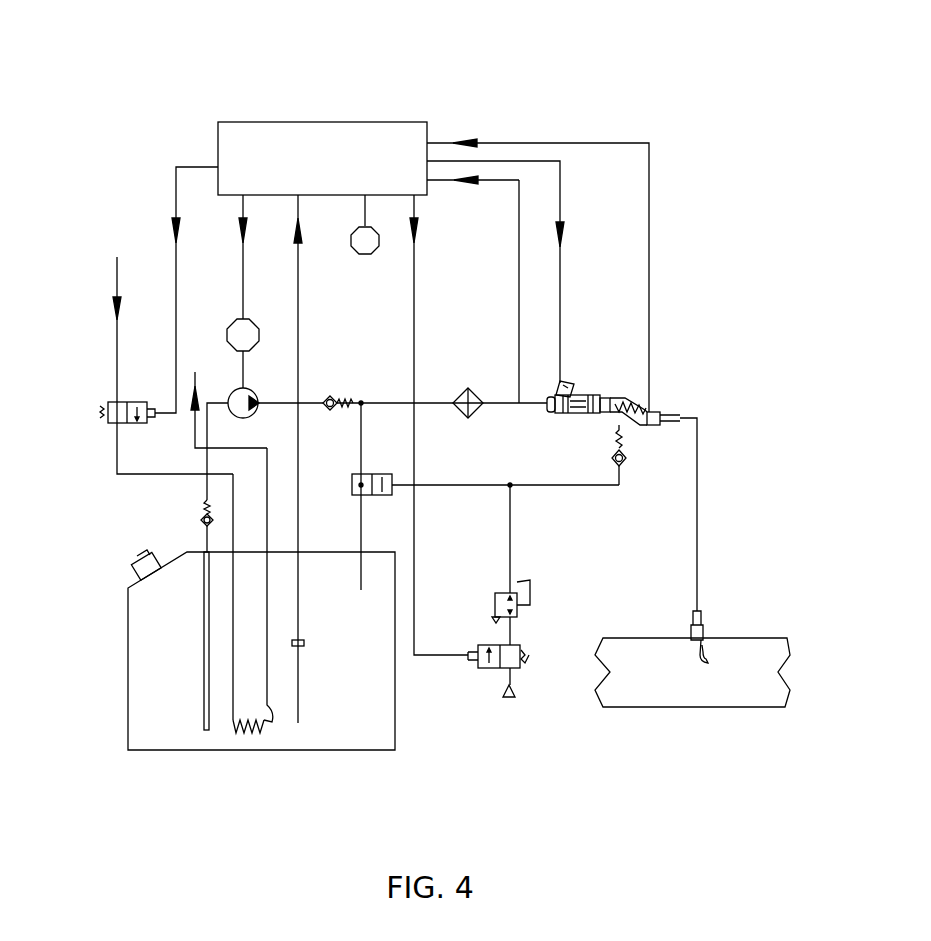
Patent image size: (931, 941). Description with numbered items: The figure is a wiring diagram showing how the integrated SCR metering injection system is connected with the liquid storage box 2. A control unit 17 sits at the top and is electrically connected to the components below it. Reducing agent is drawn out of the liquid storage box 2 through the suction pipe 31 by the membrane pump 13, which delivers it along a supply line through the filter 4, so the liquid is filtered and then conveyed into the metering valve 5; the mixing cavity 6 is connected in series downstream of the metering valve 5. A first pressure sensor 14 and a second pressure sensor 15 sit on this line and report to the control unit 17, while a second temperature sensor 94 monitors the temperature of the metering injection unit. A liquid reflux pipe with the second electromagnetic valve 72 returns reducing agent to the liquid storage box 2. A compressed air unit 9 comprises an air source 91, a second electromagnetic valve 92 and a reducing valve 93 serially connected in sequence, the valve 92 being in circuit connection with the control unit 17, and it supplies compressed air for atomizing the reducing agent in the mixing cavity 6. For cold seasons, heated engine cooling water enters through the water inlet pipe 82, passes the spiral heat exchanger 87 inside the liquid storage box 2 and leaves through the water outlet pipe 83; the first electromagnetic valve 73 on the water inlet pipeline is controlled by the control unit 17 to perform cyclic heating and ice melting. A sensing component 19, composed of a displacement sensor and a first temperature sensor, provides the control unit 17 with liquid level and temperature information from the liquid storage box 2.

The control unit 17 is at (328, 128).
The second temperature sensor 94 is at (372, 250).
The membrane pump 13 is at (235, 390).
The first electromagnetic valve 73 is at (108, 398).
The filter 4 is at (460, 388).
The first pressure sensor 14 is at (515, 383).
The mixing cavity 6 is at (633, 395).
The second pressure sensor 15 is at (663, 384).
The second electromagnetic valve 72 is at (368, 472).
The metering valve 5 is at (570, 413).
The liquid storage box 2 is at (148, 605).
The reducing valve 93 is at (493, 597).
The second electromagnetic valve 92 is at (520, 645).
The air source 91 is at (503, 700).
The compressed air unit 9 is at (560, 703).
The suction pipe 31 is at (205, 670).
The sensing component 19 is at (300, 680).
The water inlet pipe 82 is at (233, 735).
The heat exchanger 87 is at (247, 733).
The water outlet pipe 83 is at (272, 722).